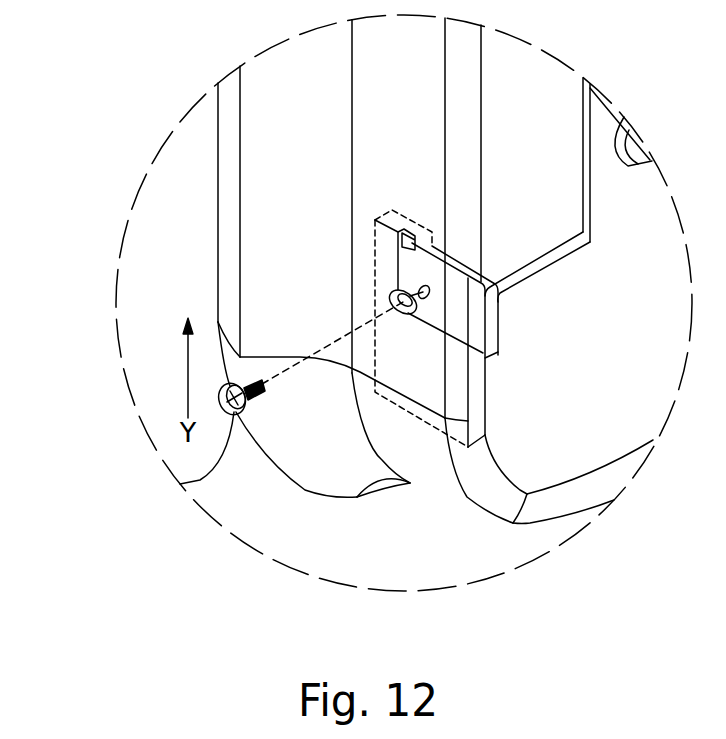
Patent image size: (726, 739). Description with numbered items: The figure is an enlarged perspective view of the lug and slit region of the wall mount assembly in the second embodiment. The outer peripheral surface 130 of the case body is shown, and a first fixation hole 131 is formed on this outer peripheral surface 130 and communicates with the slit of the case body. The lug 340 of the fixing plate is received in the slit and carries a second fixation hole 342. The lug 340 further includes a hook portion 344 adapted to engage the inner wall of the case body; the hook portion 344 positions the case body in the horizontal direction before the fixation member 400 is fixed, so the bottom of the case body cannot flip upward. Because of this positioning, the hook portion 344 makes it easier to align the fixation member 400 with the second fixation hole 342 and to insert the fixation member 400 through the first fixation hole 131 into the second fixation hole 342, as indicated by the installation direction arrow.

The outer peripheral surface 130 is at (362, 113).
The first fixation hole 131 is at (398, 298).
The lug 340 is at (483, 322).
The second fixation hole 342 is at (375, 258).
The hook portion 344 is at (407, 231).
The fixation member 400 is at (222, 415).